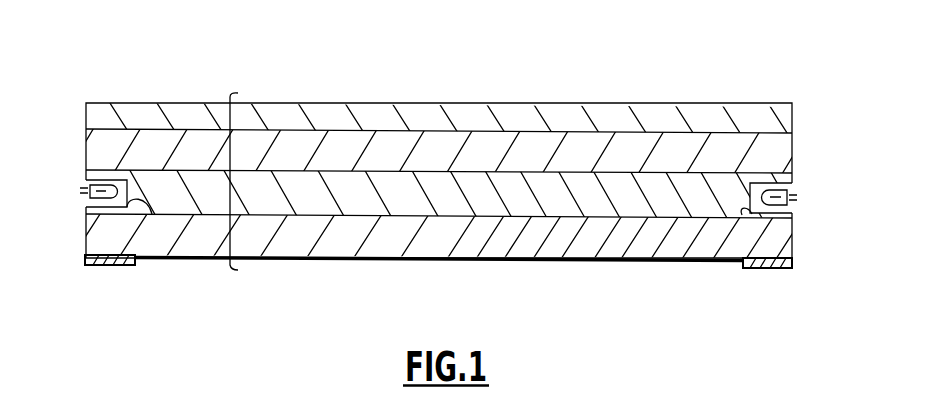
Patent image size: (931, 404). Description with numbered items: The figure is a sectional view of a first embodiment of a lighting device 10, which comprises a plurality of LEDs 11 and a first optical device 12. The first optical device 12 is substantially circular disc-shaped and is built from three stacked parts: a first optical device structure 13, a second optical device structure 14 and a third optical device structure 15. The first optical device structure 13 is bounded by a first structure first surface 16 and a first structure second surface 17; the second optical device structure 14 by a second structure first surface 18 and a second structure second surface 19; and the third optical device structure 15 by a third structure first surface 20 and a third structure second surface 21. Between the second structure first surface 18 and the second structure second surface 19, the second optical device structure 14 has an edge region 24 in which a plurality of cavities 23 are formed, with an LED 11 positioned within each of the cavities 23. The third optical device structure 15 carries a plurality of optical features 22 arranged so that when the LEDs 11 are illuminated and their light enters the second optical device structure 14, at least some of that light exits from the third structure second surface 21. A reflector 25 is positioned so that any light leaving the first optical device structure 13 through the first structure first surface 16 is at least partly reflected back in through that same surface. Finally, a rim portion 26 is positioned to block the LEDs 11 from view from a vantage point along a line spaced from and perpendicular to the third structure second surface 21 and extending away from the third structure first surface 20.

The lighting device 10 is at (445, 186).
The LED 11 is at (100, 199).
The first optical device 12 is at (230, 148).
The first optical device structure 13 is at (790, 148).
The second optical device structure 14 is at (705, 202).
The third optical device structure 15 is at (732, 233).
The first structure first surface 16 is at (745, 118).
The first structure second surface 17 is at (699, 152).
The second structure first surface 18 is at (646, 153).
The second structure second surface 19 is at (593, 200).
The third structure first surface 20 is at (626, 228).
The third structure second surface 21 is at (580, 272).
The optical features 22 is at (417, 270).
The cavities 23 is at (152, 214).
The edge region 24 is at (80, 170).
The reflector 25 is at (504, 106).
The rim portion 26 is at (110, 268).